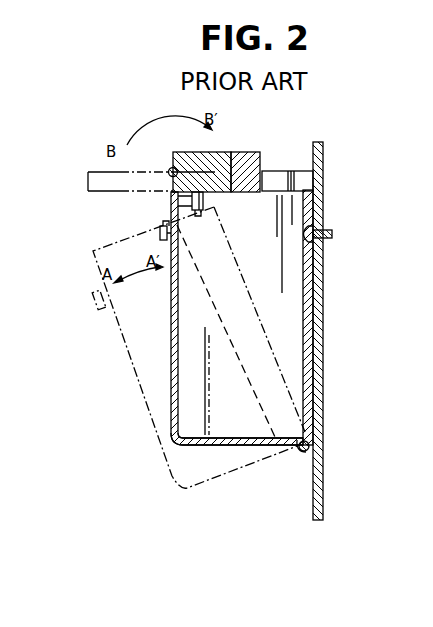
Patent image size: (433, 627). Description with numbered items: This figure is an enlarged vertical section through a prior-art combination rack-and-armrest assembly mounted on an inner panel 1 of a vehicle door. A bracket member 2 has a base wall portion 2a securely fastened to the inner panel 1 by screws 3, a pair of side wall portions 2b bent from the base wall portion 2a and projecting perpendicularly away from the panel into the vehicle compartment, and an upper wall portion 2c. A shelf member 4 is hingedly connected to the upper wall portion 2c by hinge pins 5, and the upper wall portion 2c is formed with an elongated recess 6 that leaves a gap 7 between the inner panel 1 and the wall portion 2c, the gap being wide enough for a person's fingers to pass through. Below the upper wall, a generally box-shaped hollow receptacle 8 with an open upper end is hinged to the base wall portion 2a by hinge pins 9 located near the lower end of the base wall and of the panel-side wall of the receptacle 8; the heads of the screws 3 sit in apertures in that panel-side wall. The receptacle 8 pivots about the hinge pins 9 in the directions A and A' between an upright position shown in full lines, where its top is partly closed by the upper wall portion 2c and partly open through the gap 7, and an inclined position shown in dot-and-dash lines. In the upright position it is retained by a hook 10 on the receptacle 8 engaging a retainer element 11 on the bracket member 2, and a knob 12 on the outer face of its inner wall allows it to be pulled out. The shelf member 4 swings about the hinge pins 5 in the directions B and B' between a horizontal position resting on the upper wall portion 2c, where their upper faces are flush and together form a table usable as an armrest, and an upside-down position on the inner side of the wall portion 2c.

The inner panel 1 is at (323, 173).
The bracket member 2 is at (211, 297).
The base wall portion 2a is at (318, 323).
The side wall portions 2b is at (293, 452).
The upper wall portion 2c is at (242, 168).
The screws 3 is at (332, 234).
The shelf member 4 is at (223, 153).
The hinge pins 5 is at (170, 168).
The elongated recess 6 is at (269, 172).
The gap 7 is at (294, 171).
The hollow receptacle 8 is at (175, 430).
The hinge pins 9 is at (307, 451).
The hook 10 is at (204, 201).
The retainer element 11 is at (198, 214).
The knob 12 is at (160, 230).